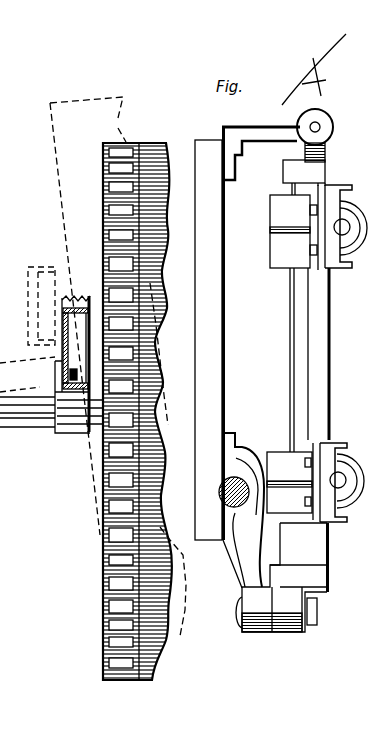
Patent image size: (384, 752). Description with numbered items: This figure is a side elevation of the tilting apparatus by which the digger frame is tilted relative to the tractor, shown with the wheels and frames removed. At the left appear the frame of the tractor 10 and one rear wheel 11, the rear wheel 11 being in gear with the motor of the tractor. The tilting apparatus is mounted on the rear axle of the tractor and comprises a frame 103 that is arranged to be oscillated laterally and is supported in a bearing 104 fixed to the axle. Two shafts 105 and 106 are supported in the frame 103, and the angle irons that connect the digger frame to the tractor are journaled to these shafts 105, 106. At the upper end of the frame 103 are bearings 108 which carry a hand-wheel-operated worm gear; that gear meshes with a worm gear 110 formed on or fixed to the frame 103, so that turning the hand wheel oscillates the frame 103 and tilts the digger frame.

The frame of the tractor 10 is at (65, 284).
The rear wheel 11 is at (113, 178).
The frame 103 is at (320, 369).
The bearing 104 is at (262, 622).
The shaft 105 is at (338, 227).
The shaft 106 is at (338, 480).
The bearings 108 is at (257, 137).
The worm gear 110 is at (326, 151).